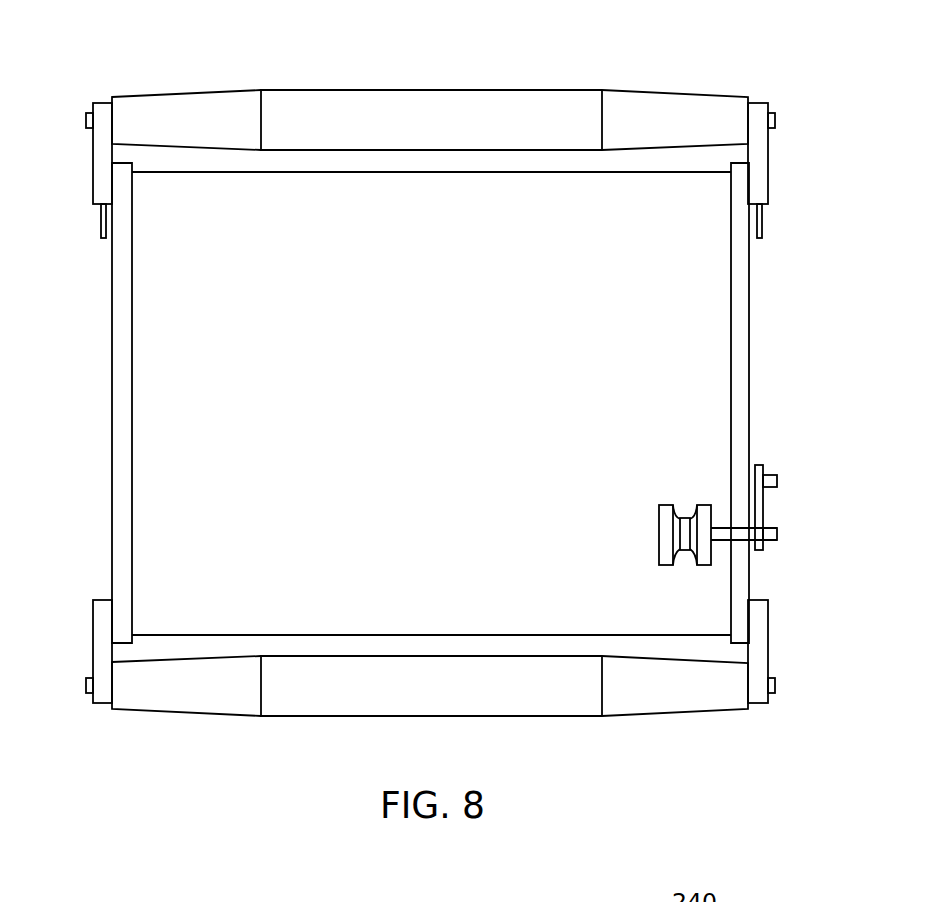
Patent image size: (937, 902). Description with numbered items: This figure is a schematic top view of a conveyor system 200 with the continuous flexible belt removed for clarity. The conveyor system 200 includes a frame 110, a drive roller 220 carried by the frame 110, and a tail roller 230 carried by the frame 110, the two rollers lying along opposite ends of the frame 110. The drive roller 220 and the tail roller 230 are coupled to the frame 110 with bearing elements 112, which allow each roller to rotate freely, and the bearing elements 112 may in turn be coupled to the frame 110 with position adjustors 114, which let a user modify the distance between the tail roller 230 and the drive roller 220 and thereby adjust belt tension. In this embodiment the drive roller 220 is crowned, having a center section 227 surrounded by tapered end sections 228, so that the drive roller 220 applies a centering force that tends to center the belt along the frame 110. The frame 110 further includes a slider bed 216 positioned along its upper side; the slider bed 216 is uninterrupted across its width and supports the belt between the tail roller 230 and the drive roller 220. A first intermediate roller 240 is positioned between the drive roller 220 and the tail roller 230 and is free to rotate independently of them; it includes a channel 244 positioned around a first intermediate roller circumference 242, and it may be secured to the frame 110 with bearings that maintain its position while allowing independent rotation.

The conveyor system 200 is at (78, 78).
The frame 110 is at (113, 370).
The bearing elements 112 is at (86, 118).
The position adjustors 114 is at (101, 226).
The slider bed 216 is at (710, 290).
The tail roller 230 is at (679, 77).
The drive roller 220 is at (714, 726).
The center section 227 is at (540, 719).
The tapered end sections 228 is at (624, 719).
The first intermediate roller 240 is at (649, 496).
The first intermediate roller circumference 242 is at (665, 566).
The channel 244 is at (686, 566).